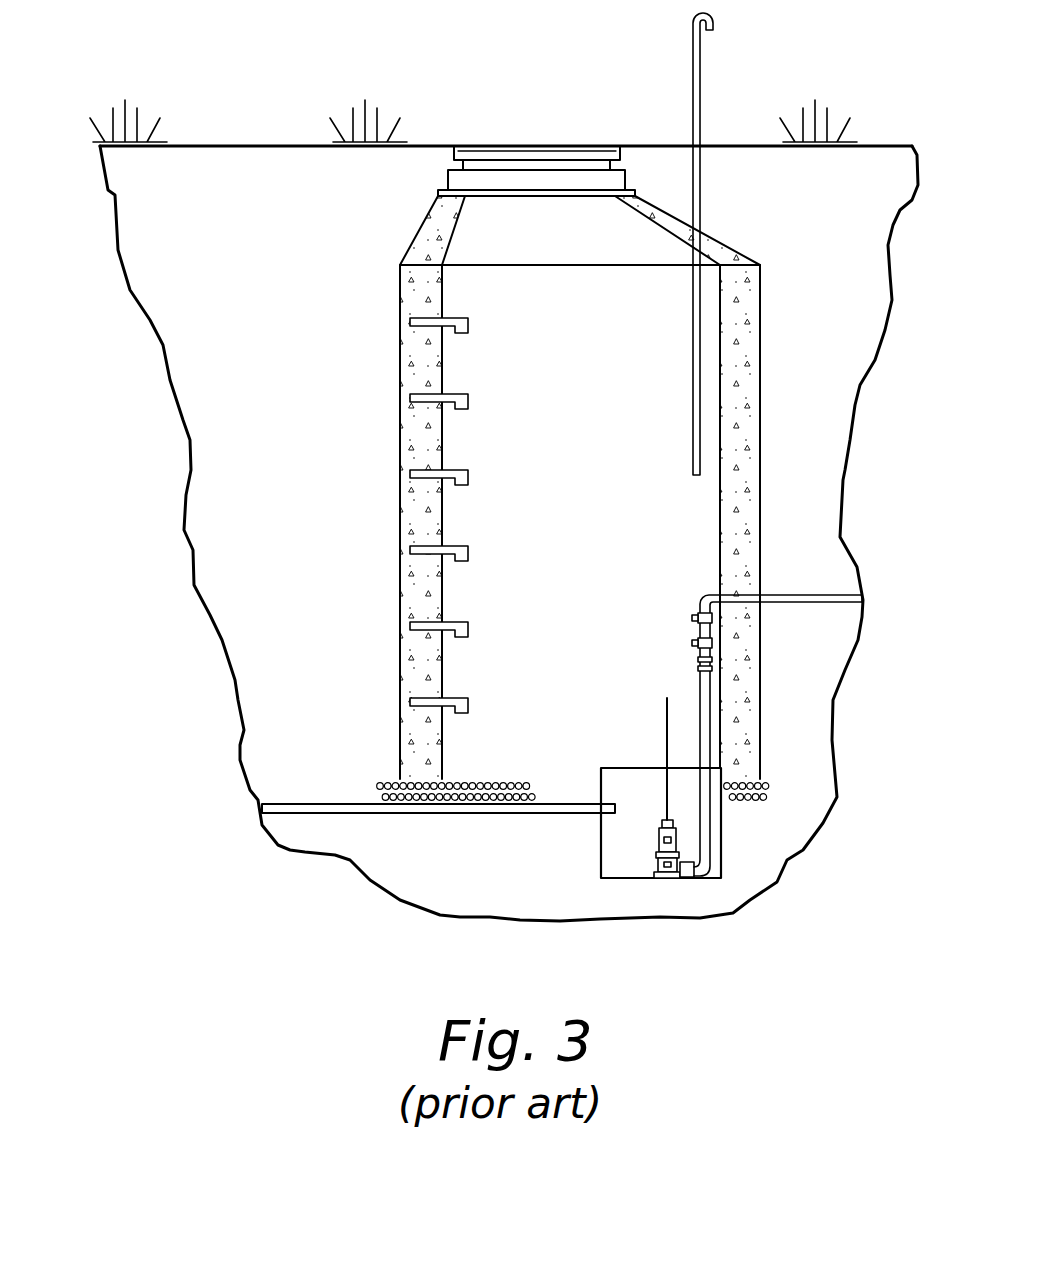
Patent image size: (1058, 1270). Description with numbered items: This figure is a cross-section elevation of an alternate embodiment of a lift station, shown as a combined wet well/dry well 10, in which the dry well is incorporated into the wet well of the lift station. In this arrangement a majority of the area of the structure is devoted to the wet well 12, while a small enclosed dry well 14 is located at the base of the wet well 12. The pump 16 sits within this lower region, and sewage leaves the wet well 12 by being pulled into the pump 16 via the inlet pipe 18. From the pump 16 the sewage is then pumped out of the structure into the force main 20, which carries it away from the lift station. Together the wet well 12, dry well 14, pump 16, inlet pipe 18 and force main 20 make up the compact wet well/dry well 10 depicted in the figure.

The wet well/dry well 10 is at (810, 295).
The wet well 12 is at (390, 348).
The dry well 14 is at (610, 845).
The pump 16 is at (674, 893).
The inlet pipe 18 is at (667, 712).
The force main 20 is at (807, 595).